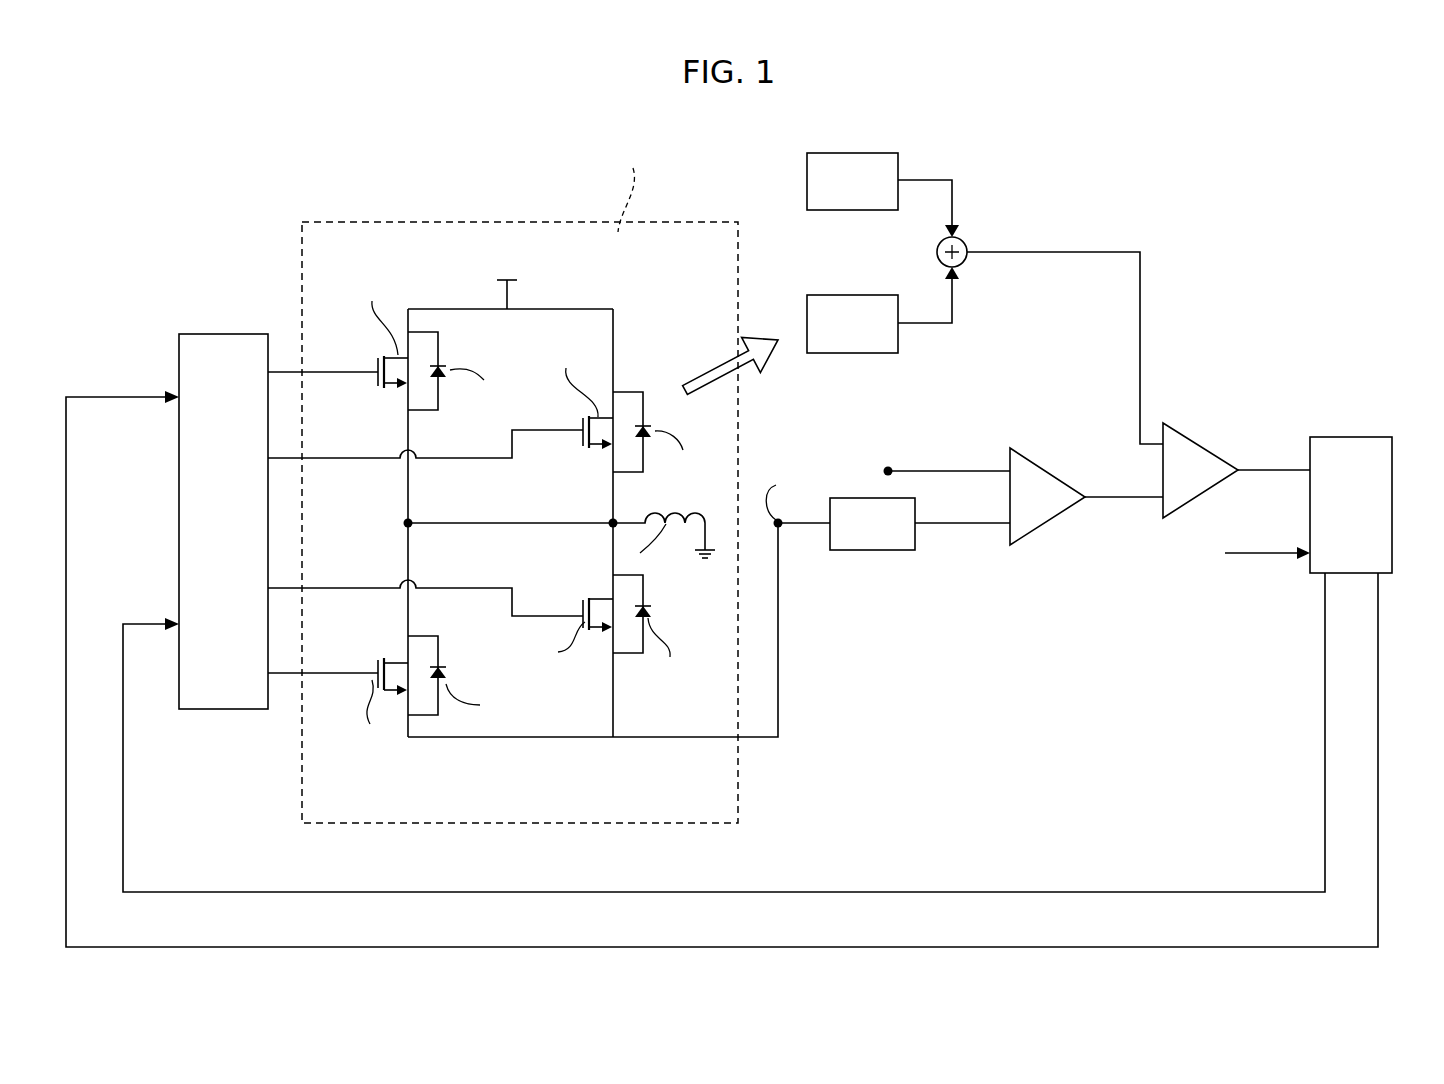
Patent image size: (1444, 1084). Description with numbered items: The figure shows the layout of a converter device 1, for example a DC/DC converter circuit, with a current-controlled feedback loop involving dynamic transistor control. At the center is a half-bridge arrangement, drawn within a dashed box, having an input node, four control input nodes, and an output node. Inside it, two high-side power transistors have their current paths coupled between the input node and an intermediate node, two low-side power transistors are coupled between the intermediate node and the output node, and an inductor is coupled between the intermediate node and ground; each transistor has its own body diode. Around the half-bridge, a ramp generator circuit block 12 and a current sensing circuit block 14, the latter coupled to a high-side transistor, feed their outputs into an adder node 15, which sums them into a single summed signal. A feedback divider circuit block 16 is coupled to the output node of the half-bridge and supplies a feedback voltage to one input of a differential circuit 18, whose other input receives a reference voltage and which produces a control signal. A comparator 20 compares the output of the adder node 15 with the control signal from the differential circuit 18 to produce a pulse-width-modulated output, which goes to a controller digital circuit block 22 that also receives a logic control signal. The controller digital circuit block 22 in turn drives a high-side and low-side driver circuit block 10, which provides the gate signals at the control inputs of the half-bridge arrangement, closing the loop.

The converter device 1 is at (1286, 240).
The high-side and low-side driver circuit block 10 is at (225, 347).
The ramp generator circuit block 12 is at (869, 178).
The current sensing circuit block 14 is at (850, 346).
The adder node 15 is at (965, 262).
The feedback divider circuit block 16 is at (870, 541).
The differential circuit 18 is at (1040, 485).
The comparator 20 is at (1208, 453).
The controller digital circuit block 22 is at (1367, 442).